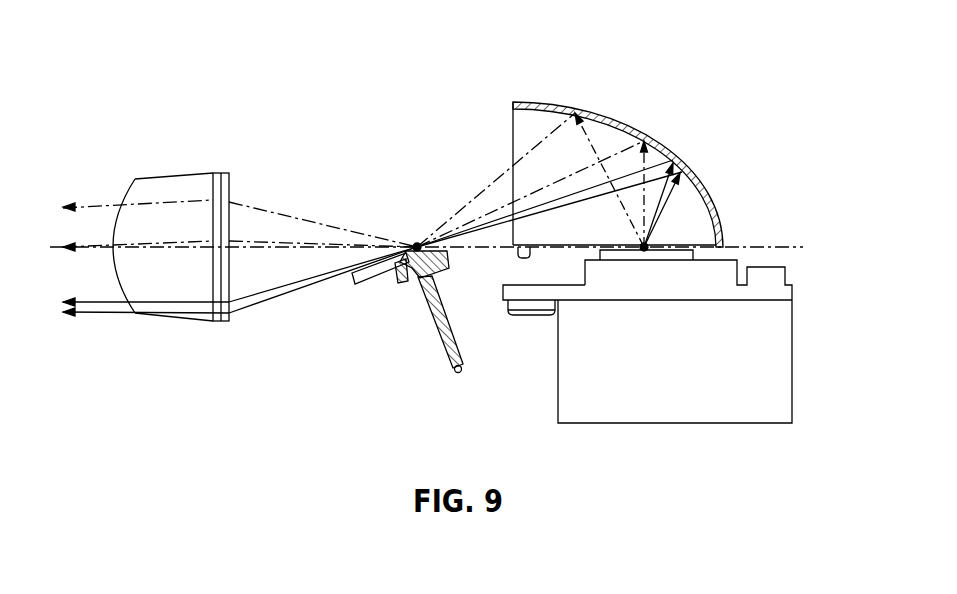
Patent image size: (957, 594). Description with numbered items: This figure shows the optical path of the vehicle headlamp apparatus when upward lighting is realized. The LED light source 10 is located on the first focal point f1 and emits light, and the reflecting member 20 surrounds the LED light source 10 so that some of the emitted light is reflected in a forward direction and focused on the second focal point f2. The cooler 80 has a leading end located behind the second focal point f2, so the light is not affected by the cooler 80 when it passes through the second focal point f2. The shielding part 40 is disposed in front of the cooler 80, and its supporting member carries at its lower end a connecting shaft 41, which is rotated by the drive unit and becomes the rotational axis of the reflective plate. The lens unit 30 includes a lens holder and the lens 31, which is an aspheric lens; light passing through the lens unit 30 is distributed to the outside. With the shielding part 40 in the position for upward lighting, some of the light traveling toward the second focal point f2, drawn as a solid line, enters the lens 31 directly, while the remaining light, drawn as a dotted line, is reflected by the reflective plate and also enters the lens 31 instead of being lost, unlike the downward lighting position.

The LED light source 10 is at (675, 262).
The reflecting member 20 is at (628, 104).
The lens unit 30 is at (181, 168).
The lens 31 is at (173, 183).
The shielding part 40 is at (431, 373).
The connecting shaft 41 is at (458, 380).
The cooler 80 is at (772, 279).
The first focal point f1 is at (650, 242).
The second focal point f2 is at (414, 243).